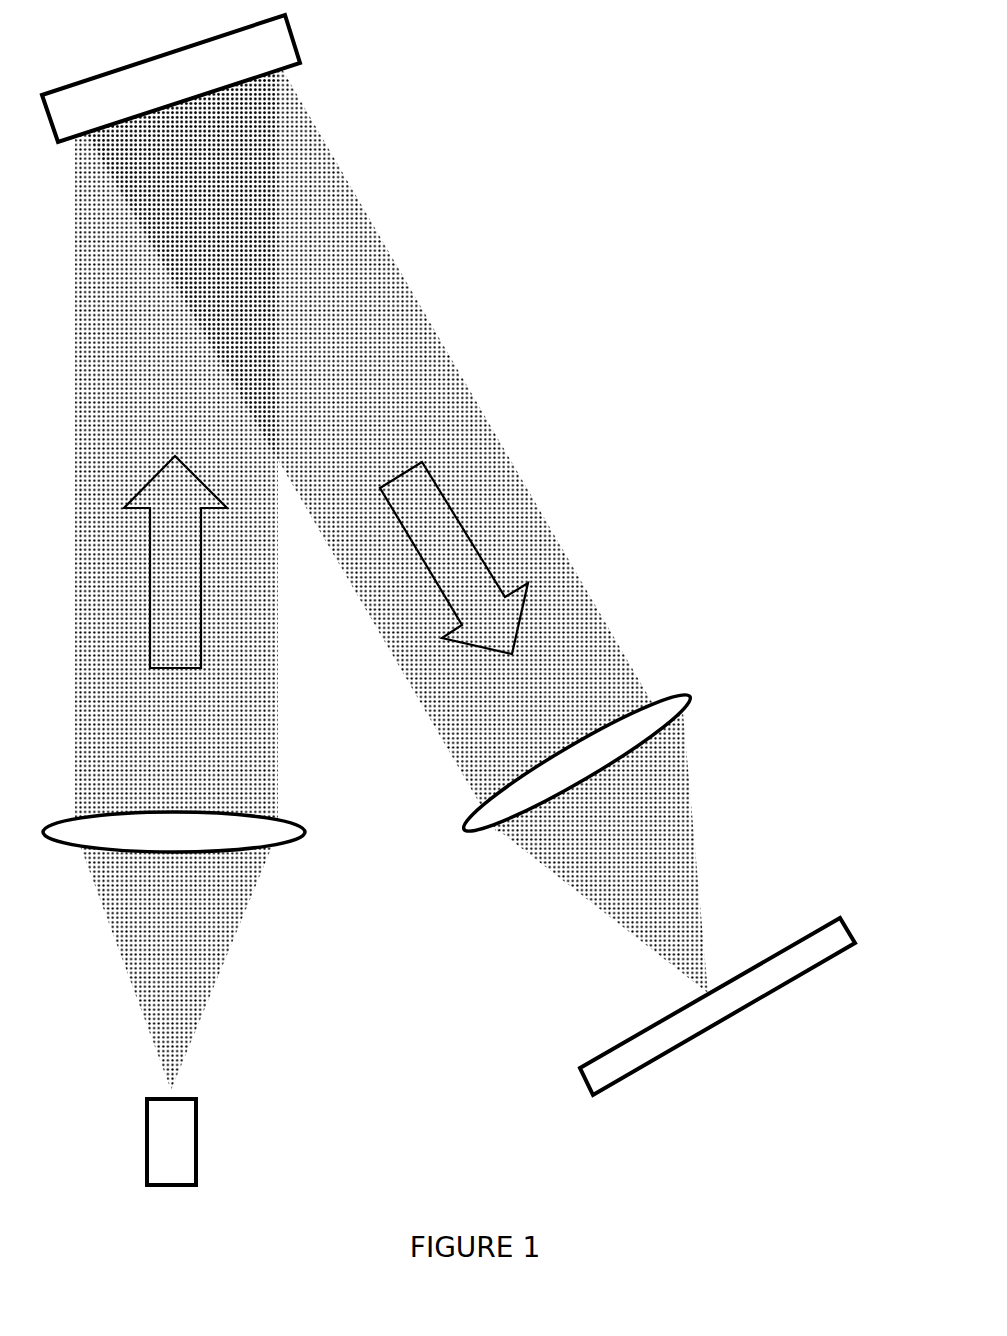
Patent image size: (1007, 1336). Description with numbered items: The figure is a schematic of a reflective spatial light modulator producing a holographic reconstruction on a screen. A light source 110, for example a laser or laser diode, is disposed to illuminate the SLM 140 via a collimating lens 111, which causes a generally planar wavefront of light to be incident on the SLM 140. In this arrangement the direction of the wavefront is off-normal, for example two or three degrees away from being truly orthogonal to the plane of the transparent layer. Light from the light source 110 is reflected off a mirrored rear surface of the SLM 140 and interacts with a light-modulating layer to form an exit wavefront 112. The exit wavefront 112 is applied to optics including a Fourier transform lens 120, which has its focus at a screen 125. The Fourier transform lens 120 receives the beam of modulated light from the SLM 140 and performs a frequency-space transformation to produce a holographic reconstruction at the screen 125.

The light source 110 is at (197, 1148).
The collimating lens 111 is at (293, 847).
The exit wavefront 112 is at (500, 515).
The Fourier transform lens 120 is at (670, 693).
The screen 125 is at (650, 1063).
The SLM 140 is at (300, 52).